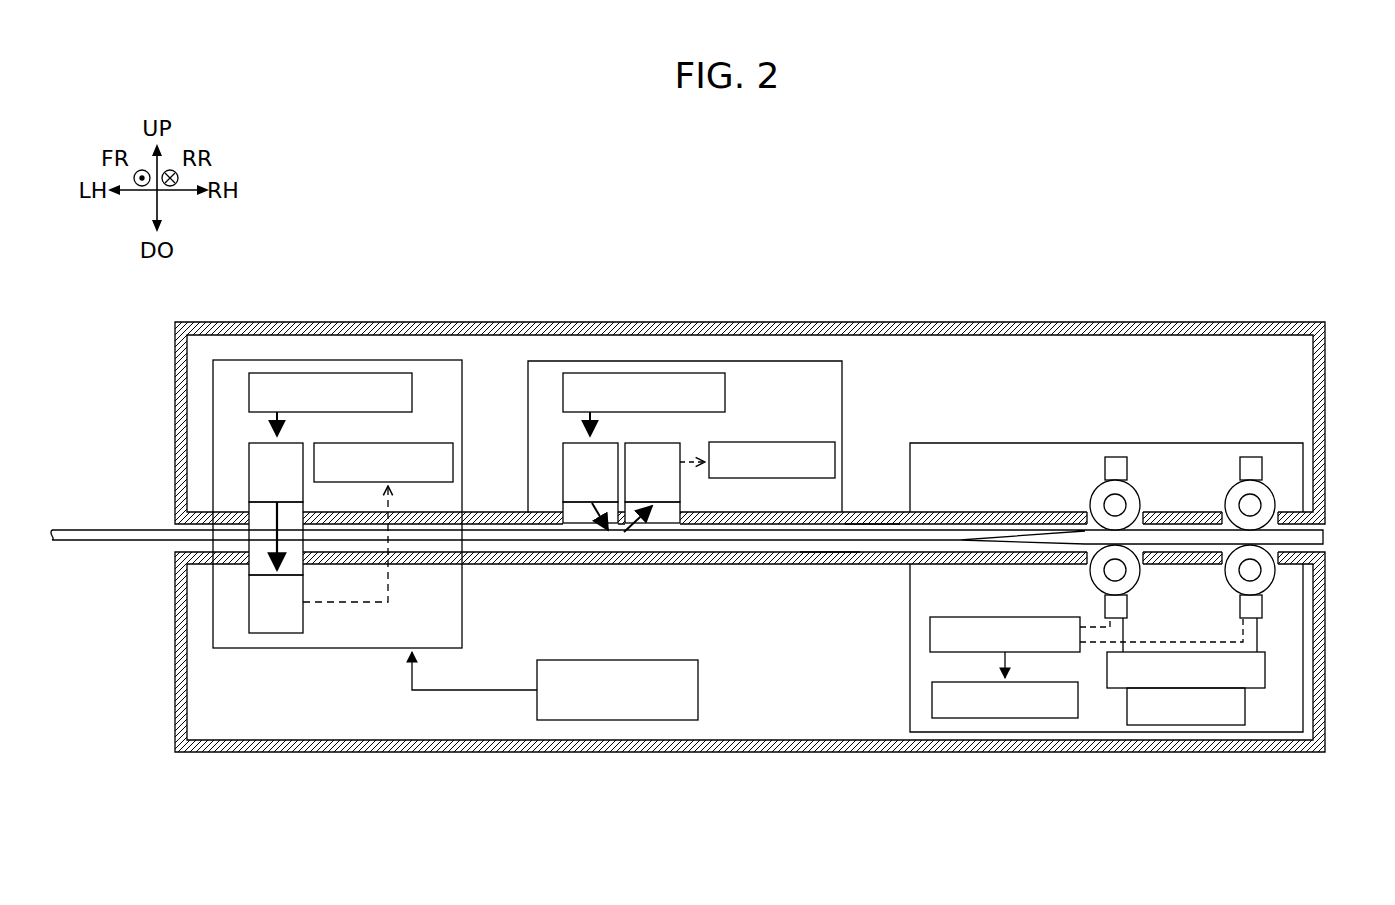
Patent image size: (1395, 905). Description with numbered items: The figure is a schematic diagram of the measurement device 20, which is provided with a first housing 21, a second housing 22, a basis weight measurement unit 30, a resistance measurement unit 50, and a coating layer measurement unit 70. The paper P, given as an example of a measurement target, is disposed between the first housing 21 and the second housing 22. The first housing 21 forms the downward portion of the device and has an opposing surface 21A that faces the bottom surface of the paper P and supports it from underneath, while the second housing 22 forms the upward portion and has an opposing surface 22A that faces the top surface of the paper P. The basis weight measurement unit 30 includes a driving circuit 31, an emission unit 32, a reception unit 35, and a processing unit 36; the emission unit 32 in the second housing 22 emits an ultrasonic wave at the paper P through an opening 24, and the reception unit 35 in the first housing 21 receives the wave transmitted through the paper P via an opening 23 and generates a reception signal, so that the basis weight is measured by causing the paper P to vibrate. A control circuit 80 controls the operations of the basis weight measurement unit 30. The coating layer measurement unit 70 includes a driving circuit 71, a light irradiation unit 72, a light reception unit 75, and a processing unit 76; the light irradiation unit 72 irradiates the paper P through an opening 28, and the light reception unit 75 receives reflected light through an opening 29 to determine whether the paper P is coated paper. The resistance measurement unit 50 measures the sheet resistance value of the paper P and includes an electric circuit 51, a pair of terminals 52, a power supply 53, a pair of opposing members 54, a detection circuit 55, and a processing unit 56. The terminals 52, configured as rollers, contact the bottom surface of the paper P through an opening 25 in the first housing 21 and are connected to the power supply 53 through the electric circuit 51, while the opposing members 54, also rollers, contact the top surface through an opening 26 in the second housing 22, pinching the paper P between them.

The measurement device 20 is at (1242, 238).
The first housing 21 is at (1274, 756).
The opposing surface 21A is at (833, 553).
The second housing 22 is at (1174, 319).
The opposing surface 22A is at (867, 530).
The opening 23 is at (263, 572).
The opening 24 is at (263, 510).
The opening 25 is at (1222, 563).
The opening 26 is at (1222, 512).
The opening 28 is at (577, 515).
The opening 29 is at (665, 517).
The basis weight measurement unit 30 is at (383, 465).
The driving circuit 31 is at (328, 372).
The emission unit 32 is at (260, 467).
The reception unit 35 is at (258, 615).
The processing unit 36 is at (427, 442).
The resistance measurement unit 50 is at (1325, 490).
The electric circuit 51 is at (1265, 668).
The pair of terminals 52 is at (1093, 582).
The power supply 53 is at (1245, 705).
The pair of opposing members 54 is at (1092, 492).
The detection circuit 55 is at (930, 630).
The processing unit 56 is at (1007, 718).
The coating layer measurement unit 70 is at (762, 360).
The driving circuit 71 is at (643, 372).
The light irradiation unit 72 is at (570, 467).
The light reception unit 75 is at (655, 448).
The processing unit 76 is at (793, 442).
The control circuit 80 is at (657, 660).
The paper P is at (88, 543).